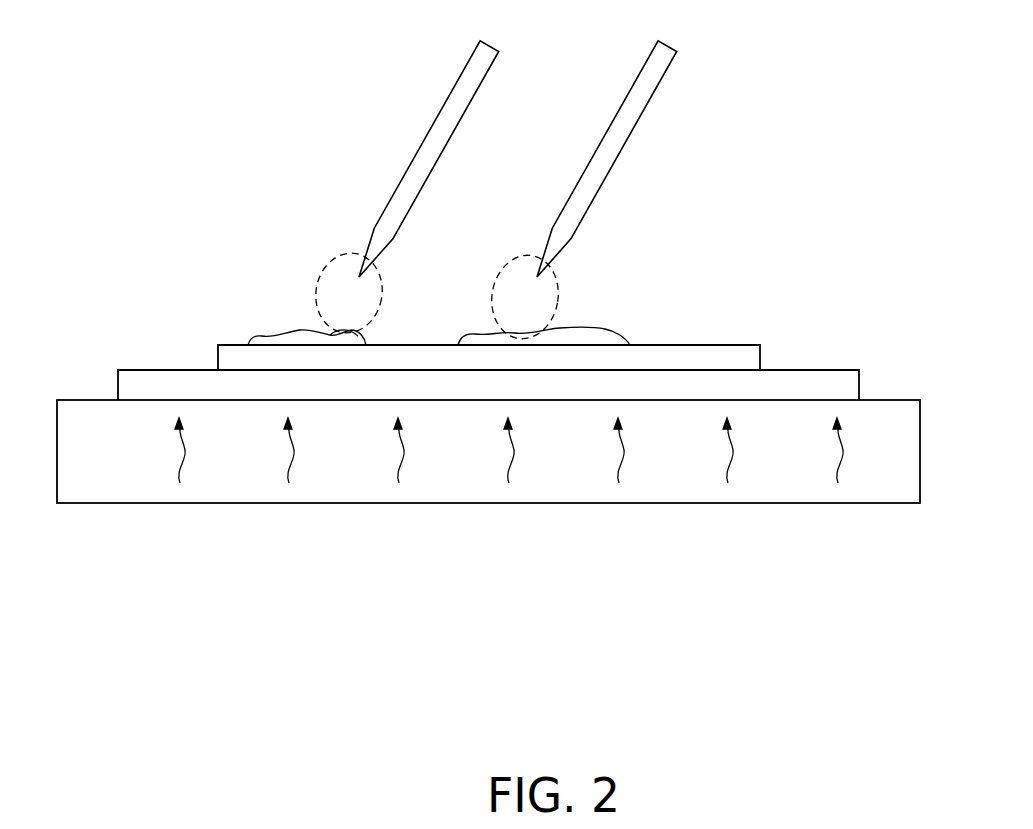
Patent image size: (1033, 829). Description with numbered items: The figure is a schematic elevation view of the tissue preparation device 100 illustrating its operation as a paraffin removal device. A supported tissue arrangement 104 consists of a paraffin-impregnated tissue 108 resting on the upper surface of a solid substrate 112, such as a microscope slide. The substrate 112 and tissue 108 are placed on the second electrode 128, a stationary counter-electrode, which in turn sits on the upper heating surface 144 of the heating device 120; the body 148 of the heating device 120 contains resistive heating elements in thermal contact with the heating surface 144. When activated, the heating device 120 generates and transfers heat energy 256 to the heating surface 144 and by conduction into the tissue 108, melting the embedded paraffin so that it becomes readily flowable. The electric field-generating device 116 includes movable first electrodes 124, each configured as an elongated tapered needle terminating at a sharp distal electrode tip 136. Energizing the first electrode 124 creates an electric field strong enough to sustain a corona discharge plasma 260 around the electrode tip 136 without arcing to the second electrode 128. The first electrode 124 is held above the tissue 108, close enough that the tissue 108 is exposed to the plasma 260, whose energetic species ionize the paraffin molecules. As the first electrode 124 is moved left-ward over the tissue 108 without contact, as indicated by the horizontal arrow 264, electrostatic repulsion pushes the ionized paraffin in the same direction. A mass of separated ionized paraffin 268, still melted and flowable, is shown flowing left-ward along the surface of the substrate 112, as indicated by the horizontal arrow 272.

The tissue preparation device 100 is at (165, 121).
The supported tissue arrangement 104 is at (710, 265).
The tissue 108 is at (600, 327).
The solid substrate 112 is at (720, 345).
The electric field-generating device 116 is at (706, 59).
The heating device 120 is at (104, 546).
The first electrode 124 is at (442, 108).
The second electrode 128 is at (823, 370).
The distal electrode tip 136 is at (370, 238).
The heating surface 144 is at (890, 400).
The body 148 is at (664, 490).
The heat energy 256 is at (300, 460).
The plasma 260 is at (328, 278).
The horizontal arrow 264 is at (474, 178).
The ionized paraffin 268 is at (267, 333).
The horizontal arrow 272 is at (237, 330).